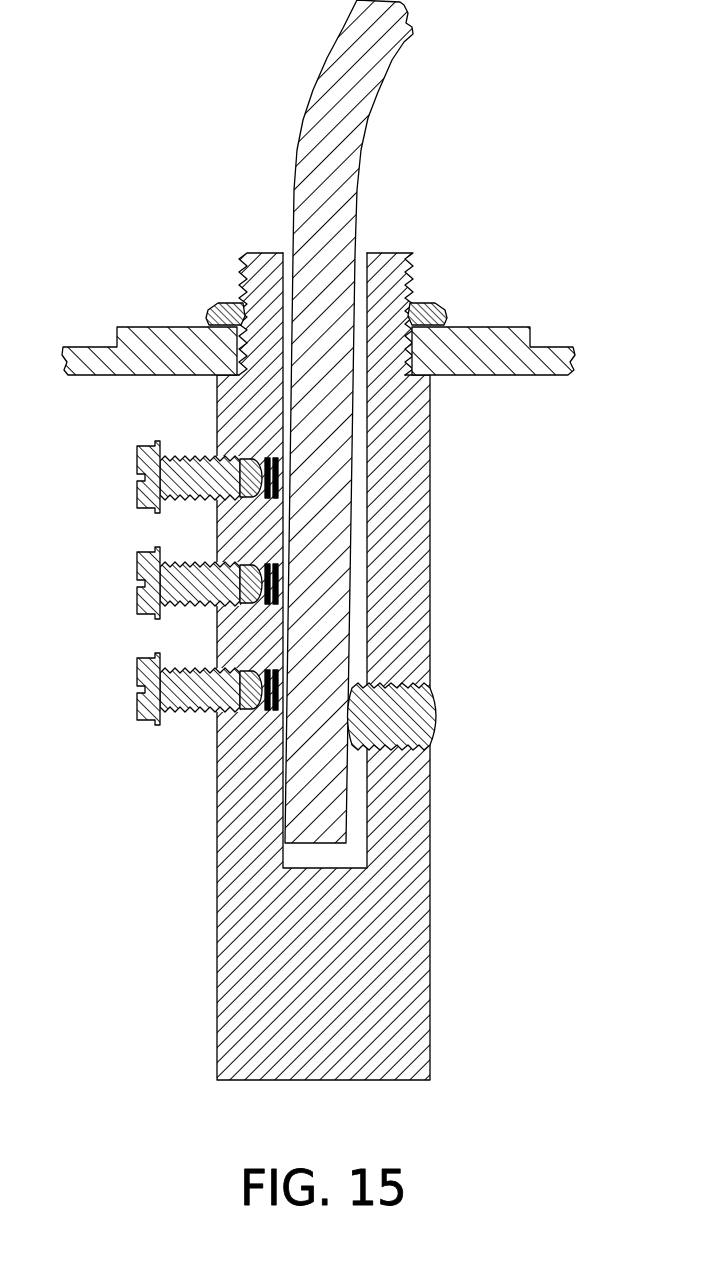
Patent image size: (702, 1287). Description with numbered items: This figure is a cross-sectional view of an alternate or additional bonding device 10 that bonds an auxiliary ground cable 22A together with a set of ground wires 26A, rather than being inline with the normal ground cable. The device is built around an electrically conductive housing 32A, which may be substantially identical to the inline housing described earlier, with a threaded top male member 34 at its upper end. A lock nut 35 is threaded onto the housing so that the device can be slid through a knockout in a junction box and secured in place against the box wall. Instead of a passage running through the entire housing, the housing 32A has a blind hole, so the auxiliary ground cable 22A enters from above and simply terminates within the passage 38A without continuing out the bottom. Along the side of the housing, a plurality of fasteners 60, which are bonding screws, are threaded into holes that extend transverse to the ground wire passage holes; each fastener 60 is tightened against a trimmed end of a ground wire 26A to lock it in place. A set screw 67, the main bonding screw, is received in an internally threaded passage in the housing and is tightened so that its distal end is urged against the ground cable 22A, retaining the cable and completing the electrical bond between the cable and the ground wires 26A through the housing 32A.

The mounting assembly 10 is at (107, 300).
The auxiliary ground cable 22A is at (385, 48).
The ground wires 26A is at (252, 458).
The housing 32A is at (400, 905).
The threaded top male member 34 is at (382, 262).
The lock nut 35 is at (432, 303).
The passage 38A is at (360, 592).
The fasteners 60 is at (141, 583).
The set screw 67 is at (408, 706).